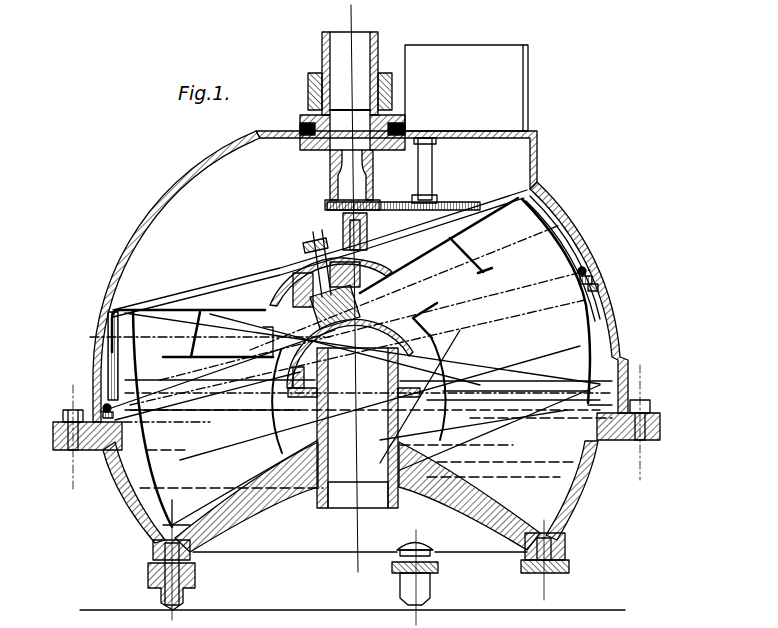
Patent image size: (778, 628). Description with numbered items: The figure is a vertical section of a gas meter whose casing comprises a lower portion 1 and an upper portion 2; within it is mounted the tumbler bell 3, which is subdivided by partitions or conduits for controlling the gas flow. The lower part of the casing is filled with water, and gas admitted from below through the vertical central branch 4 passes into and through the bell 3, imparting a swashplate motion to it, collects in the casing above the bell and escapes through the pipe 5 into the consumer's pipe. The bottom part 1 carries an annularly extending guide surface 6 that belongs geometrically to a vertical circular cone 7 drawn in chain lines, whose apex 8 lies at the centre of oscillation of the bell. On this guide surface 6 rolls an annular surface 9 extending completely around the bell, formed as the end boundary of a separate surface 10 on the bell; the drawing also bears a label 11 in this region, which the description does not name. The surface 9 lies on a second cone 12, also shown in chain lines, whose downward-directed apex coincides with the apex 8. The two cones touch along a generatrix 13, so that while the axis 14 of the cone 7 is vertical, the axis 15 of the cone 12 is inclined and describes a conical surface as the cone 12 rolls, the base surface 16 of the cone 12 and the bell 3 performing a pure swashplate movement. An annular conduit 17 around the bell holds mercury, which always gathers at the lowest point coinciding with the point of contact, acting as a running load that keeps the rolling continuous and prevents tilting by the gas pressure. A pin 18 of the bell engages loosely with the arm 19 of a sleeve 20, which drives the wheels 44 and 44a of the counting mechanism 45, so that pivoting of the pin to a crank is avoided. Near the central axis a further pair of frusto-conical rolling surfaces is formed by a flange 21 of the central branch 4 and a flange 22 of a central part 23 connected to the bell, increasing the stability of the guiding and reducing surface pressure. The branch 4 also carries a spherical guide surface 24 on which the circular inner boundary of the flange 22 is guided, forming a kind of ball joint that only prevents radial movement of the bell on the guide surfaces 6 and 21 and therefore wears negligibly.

The lower portion of the casing 1 is at (586, 499).
The upper portion of the casing 2 is at (566, 215).
The tumbler bell 3 is at (430, 255).
The vertical central branch 4 is at (399, 443).
The pipe 5 is at (362, 58).
The guide surface 6 is at (110, 438).
The vertical circular cone 7 is at (457, 393).
The apex 8 is at (428, 376).
The annular surface 9 is at (598, 287).
The separate surface 10 is at (584, 266).
The cylindrical liner 11 is at (590, 353).
The cone 12 is at (477, 331).
The generatrix 13 is at (190, 410).
The axis of the cone 7 14 is at (357, 526).
The axis of the cone 12 15 is at (312, 240).
The base surface of the cone 12 16 is at (468, 298).
The annular conduit 17 is at (538, 213).
The pin 18 is at (302, 247).
The arm 19 is at (332, 240).
The sleeve 20 is at (360, 173).
The flange of the central branch 21 is at (293, 440).
The flange of the central part 22 is at (300, 374).
The central part 23 is at (360, 306).
The spherical guide surface 24 is at (250, 318).
The wheel 44 is at (470, 203).
The wheel 44a is at (374, 211).
The counting mechanism 45 is at (512, 92).